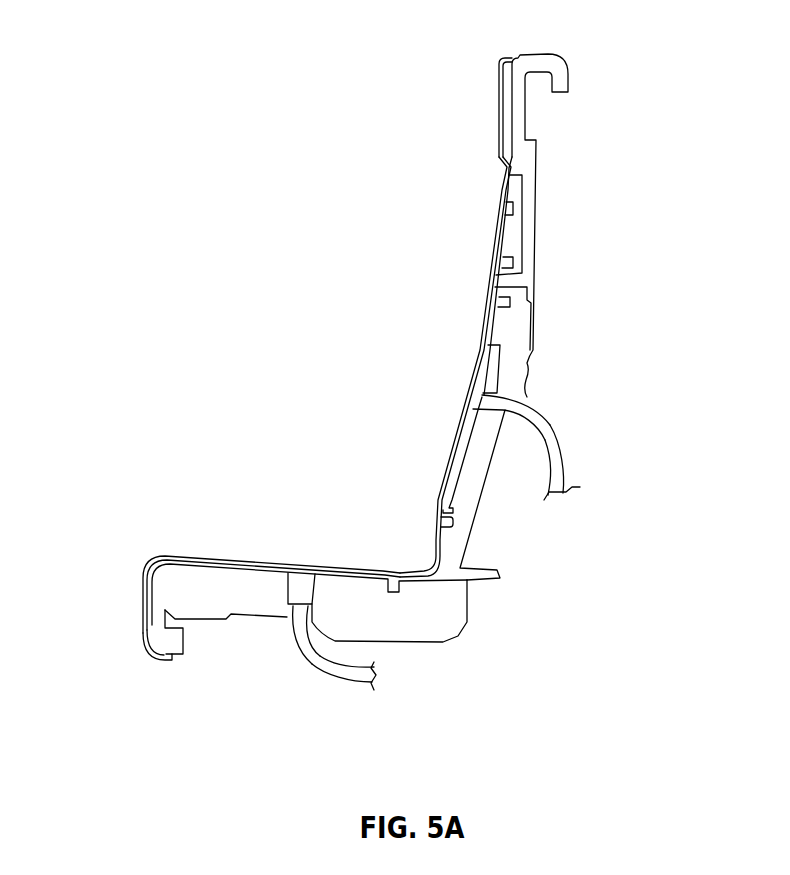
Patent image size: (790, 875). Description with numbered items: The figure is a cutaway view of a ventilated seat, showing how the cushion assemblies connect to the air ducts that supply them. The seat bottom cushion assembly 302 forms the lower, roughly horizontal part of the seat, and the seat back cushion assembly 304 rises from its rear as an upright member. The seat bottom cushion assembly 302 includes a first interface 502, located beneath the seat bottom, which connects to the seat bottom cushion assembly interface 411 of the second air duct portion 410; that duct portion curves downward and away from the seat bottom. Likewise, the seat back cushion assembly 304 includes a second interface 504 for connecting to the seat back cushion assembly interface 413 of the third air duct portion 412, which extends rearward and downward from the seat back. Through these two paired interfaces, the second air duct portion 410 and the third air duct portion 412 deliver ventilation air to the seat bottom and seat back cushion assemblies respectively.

The seat bottom cushion assembly 302 is at (142, 592).
The seat back cushion assembly 304 is at (516, 126).
The second air duct portion 410 is at (348, 680).
The seat bottom cushion assembly interface 411 is at (295, 612).
The third air duct portion 412 is at (553, 448).
The seat back cushion assembly interface 413 is at (527, 400).
The first interface 502 is at (303, 588).
The second interface 504 is at (488, 395).